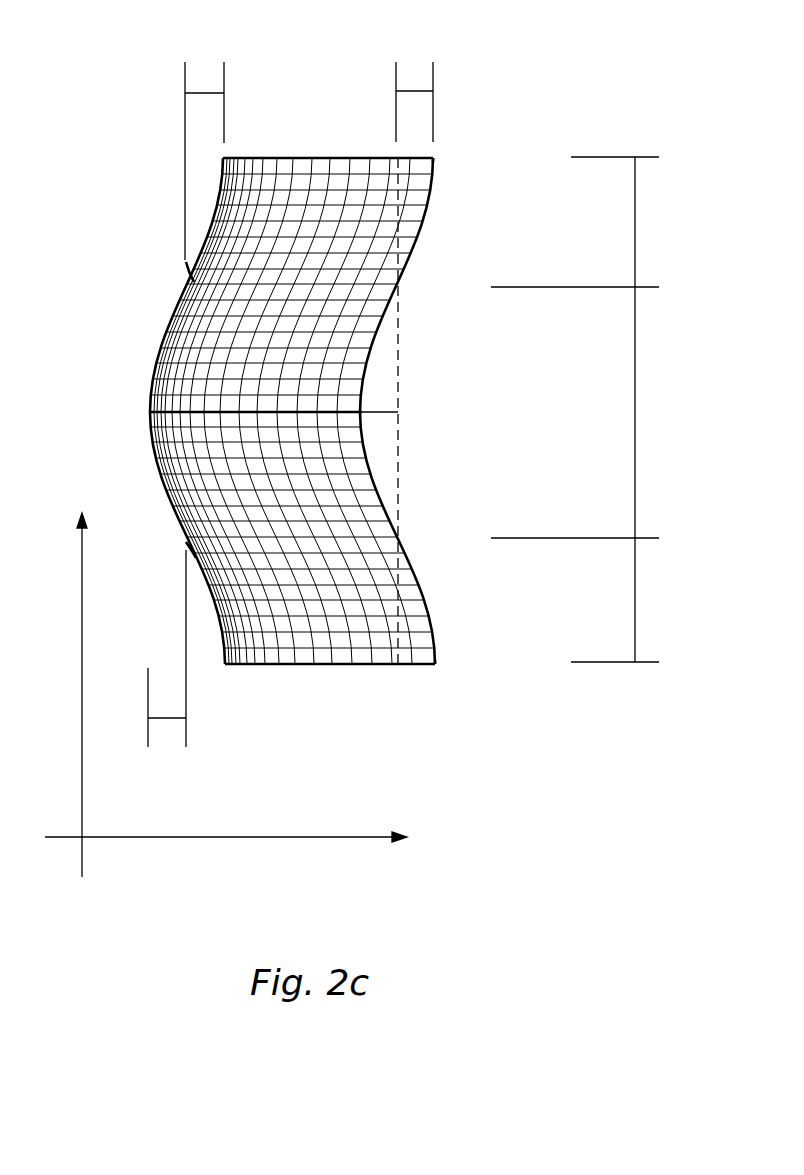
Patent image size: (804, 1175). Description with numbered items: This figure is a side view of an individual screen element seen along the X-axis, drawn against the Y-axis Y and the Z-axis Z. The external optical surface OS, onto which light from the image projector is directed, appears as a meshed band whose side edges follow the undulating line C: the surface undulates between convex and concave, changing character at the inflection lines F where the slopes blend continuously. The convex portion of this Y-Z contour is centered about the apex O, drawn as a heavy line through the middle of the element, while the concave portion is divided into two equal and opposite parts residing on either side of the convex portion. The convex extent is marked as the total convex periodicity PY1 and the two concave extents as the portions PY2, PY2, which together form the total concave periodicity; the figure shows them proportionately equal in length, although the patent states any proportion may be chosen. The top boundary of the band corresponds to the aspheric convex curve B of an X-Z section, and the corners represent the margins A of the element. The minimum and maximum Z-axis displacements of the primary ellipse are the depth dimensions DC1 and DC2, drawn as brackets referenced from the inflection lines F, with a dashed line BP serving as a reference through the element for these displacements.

The optical surface OS is at (345, 665).
The margins A is at (433, 157).
The aspheric convex curves B is at (308, 158).
The undulating line C is at (433, 198).
The inflection line F is at (187, 267).
The apex O is at (150, 412).
The base plane reference line BP is at (400, 325).
The minimum Z-axis displacement depth dimension DC1 is at (203, 73).
The maximum Z-axis displacement depth dimension DC2 is at (380, 412).
The total convex periodicity PY1 is at (604, 412).
The total concave periodicity portion PY2 is at (653, 409).
The Y-axis Y is at (80, 712).
The Z-axis Z is at (215, 839).